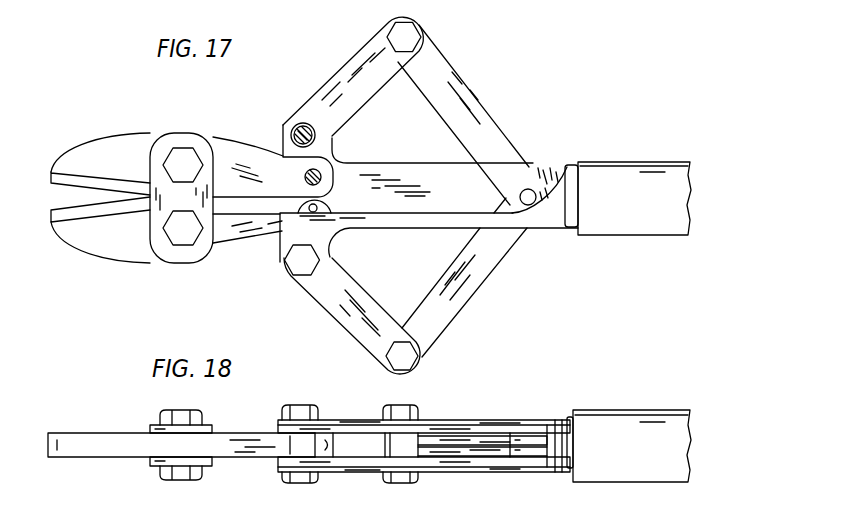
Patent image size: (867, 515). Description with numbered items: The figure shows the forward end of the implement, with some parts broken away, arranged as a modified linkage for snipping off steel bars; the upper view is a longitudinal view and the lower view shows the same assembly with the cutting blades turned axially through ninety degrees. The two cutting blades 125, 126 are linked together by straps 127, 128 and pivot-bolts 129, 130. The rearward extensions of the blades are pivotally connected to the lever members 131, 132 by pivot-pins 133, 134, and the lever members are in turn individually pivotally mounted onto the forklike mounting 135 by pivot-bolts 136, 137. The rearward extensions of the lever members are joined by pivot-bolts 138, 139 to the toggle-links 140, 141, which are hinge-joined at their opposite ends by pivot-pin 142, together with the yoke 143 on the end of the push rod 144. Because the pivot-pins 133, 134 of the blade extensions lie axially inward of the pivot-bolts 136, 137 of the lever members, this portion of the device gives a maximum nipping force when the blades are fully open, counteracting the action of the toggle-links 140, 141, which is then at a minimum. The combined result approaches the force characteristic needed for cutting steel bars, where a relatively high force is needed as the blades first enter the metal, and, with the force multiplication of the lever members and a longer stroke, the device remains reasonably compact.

In FIG. 17, the cutting blade 125 is at (112, 143).
In FIG. 18, the cutting blade 125 is at (85, 440).
In FIG. 17, the cutting blade 126 is at (125, 257).
In FIG. 17, the strap 127 is at (168, 255).
In FIG. 18, the strap 127 is at (148, 459).
In FIG. 18, the strap 128 is at (150, 430).
In FIG. 17, the pivot-bolt 129 is at (188, 238).
In FIG. 17, the pivot-bolt 130 is at (177, 155).
In FIG. 18, the pivot-bolt 130 is at (185, 470).
In FIG. 17, the lever member 131 is at (325, 290).
In FIG. 17, the lever member 132 is at (327, 100).
In FIG. 18, the lever member 132 is at (352, 432).
In FIG. 17, the pivot-pin 133 is at (310, 213).
In FIG. 17, the pivot-pin 134 is at (304, 174).
In FIG. 17, the forklike mounting 135 is at (430, 220).
In FIG. 18, the forklike mounting 135 is at (552, 468).
In FIG. 17, the pivot-bolt 136 is at (292, 131).
In FIG. 18, the pivot-bolt 136 is at (300, 478).
In FIG. 17, the pivot-bolt 137 is at (296, 263).
In FIG. 17, the pivot-bolt 138 is at (406, 37).
In FIG. 18, the pivot-bolt 138 is at (404, 478).
In FIG. 17, the pivot-bolt 139 is at (410, 350).
In FIG. 17, the toggle-link 140 is at (463, 107).
In FIG. 18, the toggle-link 140 is at (480, 456).
In FIG. 17, the toggle-link 141 is at (470, 283).
In FIG. 18, the toggle-link 141 is at (465, 440).
In FIG. 17, the pivot-pin 142 is at (529, 206).
In FIG. 17, the yoke 143 is at (538, 167).
In FIG. 18, the yoke 143 is at (532, 432).
In FIG. 17, the push rod 144 is at (563, 170).
In FIG. 18, the push rod 144 is at (560, 432).